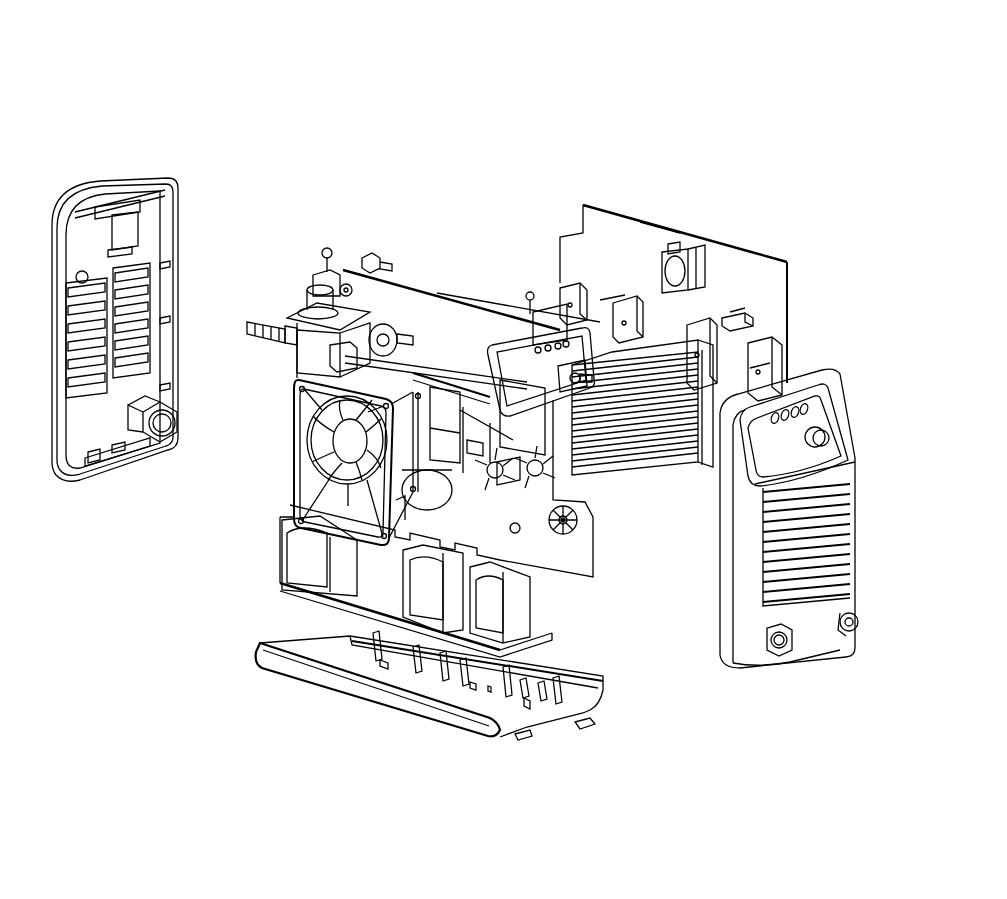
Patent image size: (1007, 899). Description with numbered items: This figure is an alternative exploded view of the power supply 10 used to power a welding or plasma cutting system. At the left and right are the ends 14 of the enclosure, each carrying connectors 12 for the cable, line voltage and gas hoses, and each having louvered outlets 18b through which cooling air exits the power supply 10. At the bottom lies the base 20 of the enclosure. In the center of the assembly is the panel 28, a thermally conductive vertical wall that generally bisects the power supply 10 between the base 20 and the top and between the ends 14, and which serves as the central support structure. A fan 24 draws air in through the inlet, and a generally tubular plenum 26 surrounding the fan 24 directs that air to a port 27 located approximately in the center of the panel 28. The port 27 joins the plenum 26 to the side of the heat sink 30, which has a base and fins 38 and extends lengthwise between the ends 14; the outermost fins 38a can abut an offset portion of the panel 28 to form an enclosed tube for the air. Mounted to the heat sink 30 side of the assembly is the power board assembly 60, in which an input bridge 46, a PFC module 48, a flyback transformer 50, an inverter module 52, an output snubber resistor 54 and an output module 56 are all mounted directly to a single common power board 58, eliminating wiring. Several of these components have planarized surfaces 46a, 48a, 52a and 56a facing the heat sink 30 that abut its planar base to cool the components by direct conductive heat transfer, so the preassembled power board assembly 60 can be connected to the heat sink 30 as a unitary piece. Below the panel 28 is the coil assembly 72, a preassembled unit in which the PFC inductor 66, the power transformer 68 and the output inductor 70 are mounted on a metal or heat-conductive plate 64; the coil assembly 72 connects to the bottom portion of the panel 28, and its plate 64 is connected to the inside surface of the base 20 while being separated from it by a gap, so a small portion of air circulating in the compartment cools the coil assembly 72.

The power supply 10 is at (662, 92).
The connectors 12 is at (258, 318).
The ends 14 is at (99, 186).
The outlets 18b is at (75, 357).
The base 20 is at (354, 688).
The fan 24 is at (328, 435).
The plenum 26 is at (330, 516).
The port 27 is at (442, 430).
The panel 28 is at (597, 538).
The heat sink 30 is at (697, 460).
The fins 38 is at (634, 455).
The outermost fins 38a is at (657, 360).
The input bridge 46 is at (562, 290).
The planarized surface of input bridge 46a is at (560, 306).
The PFC module 48 is at (602, 300).
The planarized surface of PFC module 48a is at (585, 300).
The flyback transformer 50 is at (673, 243).
The inverter module 52 is at (703, 340).
The planarized surface of inverter module 52a is at (737, 316).
The output snubber resistor 54 is at (737, 307).
The output module 56 is at (764, 356).
The planarized surface of output module 56a is at (770, 367).
The power board 58 is at (620, 296).
The power board assembly 60 is at (661, 209).
The plate 64 is at (545, 628).
The PFC inductor 66 is at (295, 556).
The power transformer 68 is at (420, 592).
The output inductor 70 is at (520, 600).
The coil assembly 72 is at (248, 610).